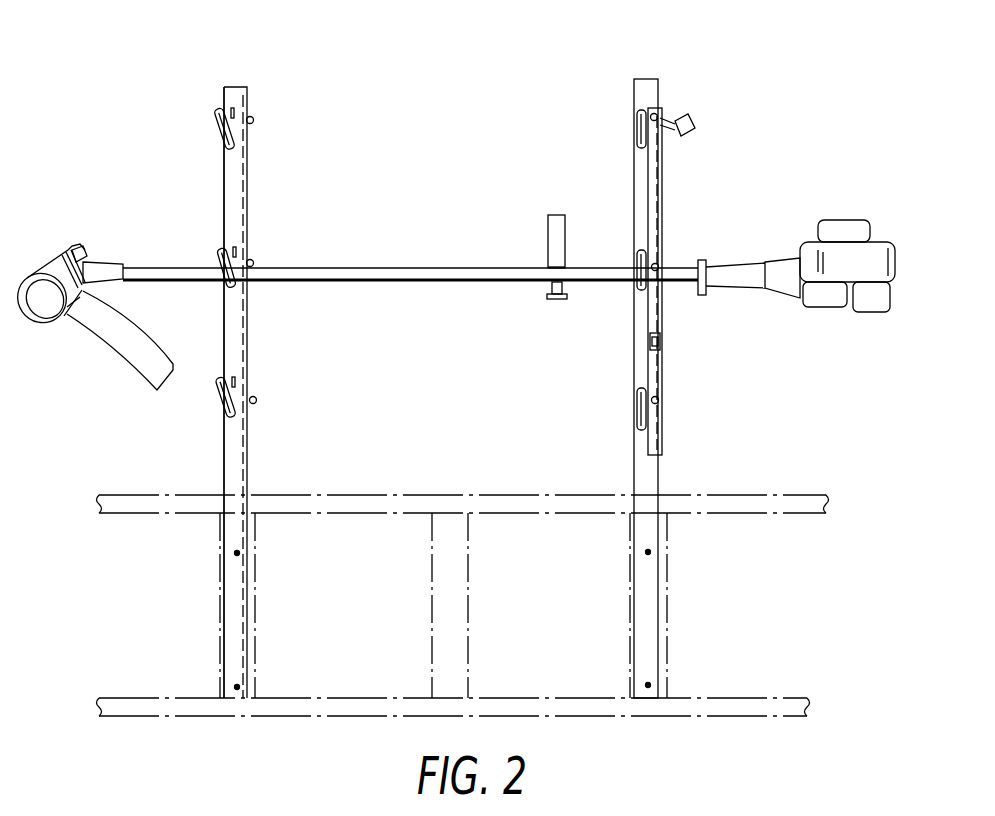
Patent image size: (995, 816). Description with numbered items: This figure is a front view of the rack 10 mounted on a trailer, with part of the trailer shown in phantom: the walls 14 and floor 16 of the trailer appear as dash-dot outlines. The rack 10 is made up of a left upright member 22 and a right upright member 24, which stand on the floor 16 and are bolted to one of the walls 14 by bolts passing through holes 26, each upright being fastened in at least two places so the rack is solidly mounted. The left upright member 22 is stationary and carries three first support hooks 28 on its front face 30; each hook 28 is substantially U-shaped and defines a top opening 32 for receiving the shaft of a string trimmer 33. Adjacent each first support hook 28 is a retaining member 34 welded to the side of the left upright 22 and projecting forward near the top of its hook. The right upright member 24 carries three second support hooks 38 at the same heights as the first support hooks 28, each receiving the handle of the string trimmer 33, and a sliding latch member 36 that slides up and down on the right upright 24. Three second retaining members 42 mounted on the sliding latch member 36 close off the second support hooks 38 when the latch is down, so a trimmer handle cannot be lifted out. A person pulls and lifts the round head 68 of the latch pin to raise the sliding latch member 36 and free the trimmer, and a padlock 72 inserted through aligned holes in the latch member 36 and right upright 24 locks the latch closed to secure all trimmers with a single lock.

The rack 10 is at (164, 89).
The walls 14 is at (782, 493).
The floor 16 is at (568, 697).
The left upright member 22 is at (238, 87).
The right upright member 24 is at (650, 79).
The holes 26 is at (237, 553).
The first support hooks 28 is at (213, 128).
The front face 30 is at (228, 180).
The top opening 32 is at (245, 252).
The string trimmer 33 is at (443, 268).
The retaining member 34 is at (258, 119).
The sliding latch member 36 is at (653, 195).
The second support hooks 38 is at (636, 125).
The second retaining members 42 is at (658, 116).
The round head 68 is at (660, 336).
The padlock 72 is at (692, 128).